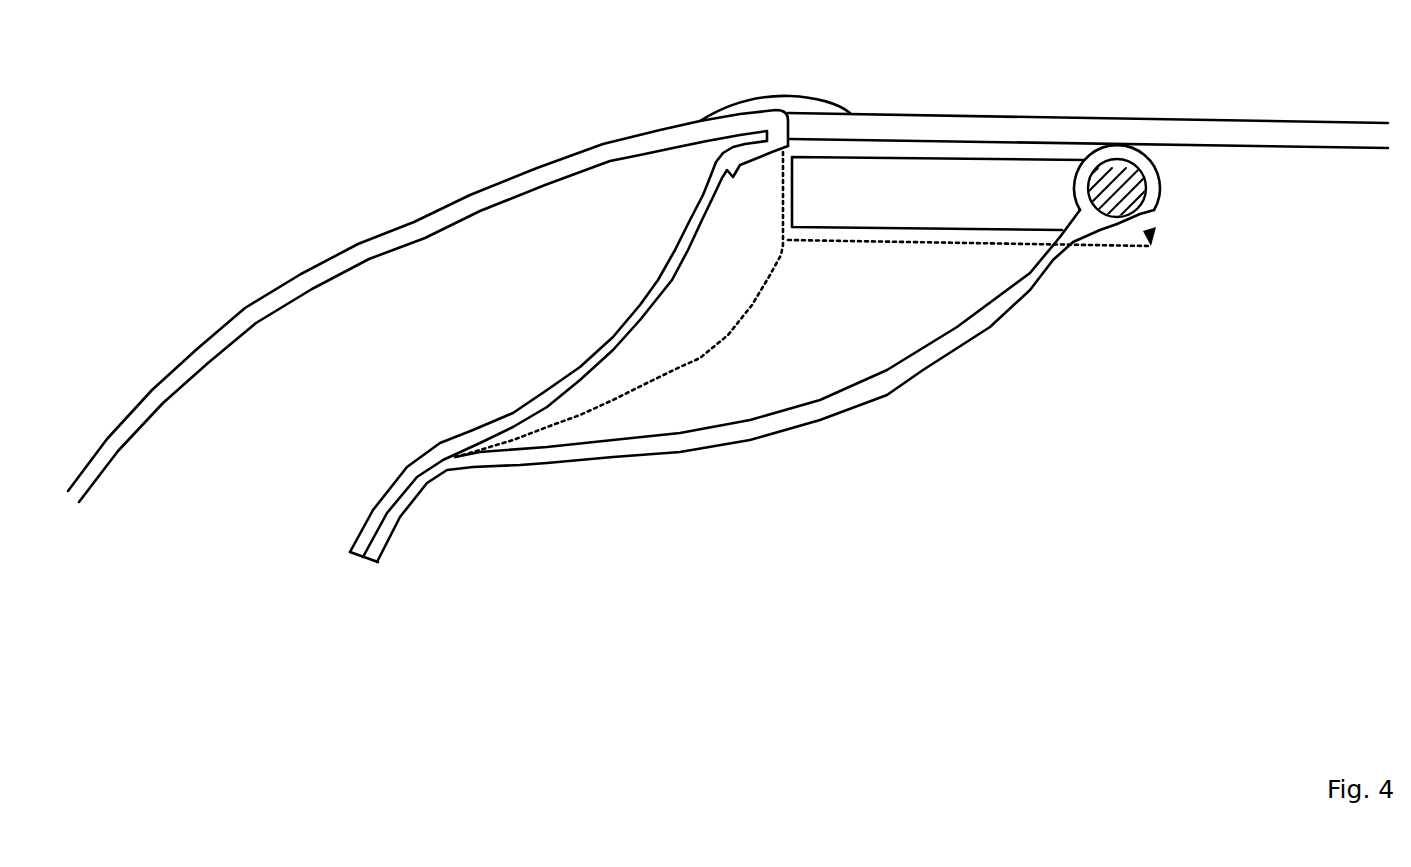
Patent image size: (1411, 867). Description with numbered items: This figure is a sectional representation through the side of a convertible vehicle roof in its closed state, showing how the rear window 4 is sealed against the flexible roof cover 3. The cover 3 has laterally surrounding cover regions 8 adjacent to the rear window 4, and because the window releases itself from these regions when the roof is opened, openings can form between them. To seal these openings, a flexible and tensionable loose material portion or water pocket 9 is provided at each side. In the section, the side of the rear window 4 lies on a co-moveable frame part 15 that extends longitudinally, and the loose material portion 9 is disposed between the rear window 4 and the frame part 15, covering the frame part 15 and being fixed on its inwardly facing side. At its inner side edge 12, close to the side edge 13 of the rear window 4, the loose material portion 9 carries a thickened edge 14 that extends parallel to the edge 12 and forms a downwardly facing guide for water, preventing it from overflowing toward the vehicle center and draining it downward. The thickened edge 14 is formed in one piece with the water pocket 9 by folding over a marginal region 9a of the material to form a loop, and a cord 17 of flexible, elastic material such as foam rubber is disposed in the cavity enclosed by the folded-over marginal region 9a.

The flexible roof cover 3 is at (485, 197).
The laterally surrounding cover regions 8 is at (641, 130).
The side edge of the rear window 13 is at (848, 86).
The rear window 4 is at (1153, 132).
The frame part 15 is at (980, 175).
The loose material portion (water pocket) 9 is at (783, 366).
The marginal region of the material portion 9a is at (1109, 232).
The inner side edge of the loose material portion 12 is at (990, 263).
The thickened edge 14 is at (1160, 168).
The cord 17 is at (1127, 200).